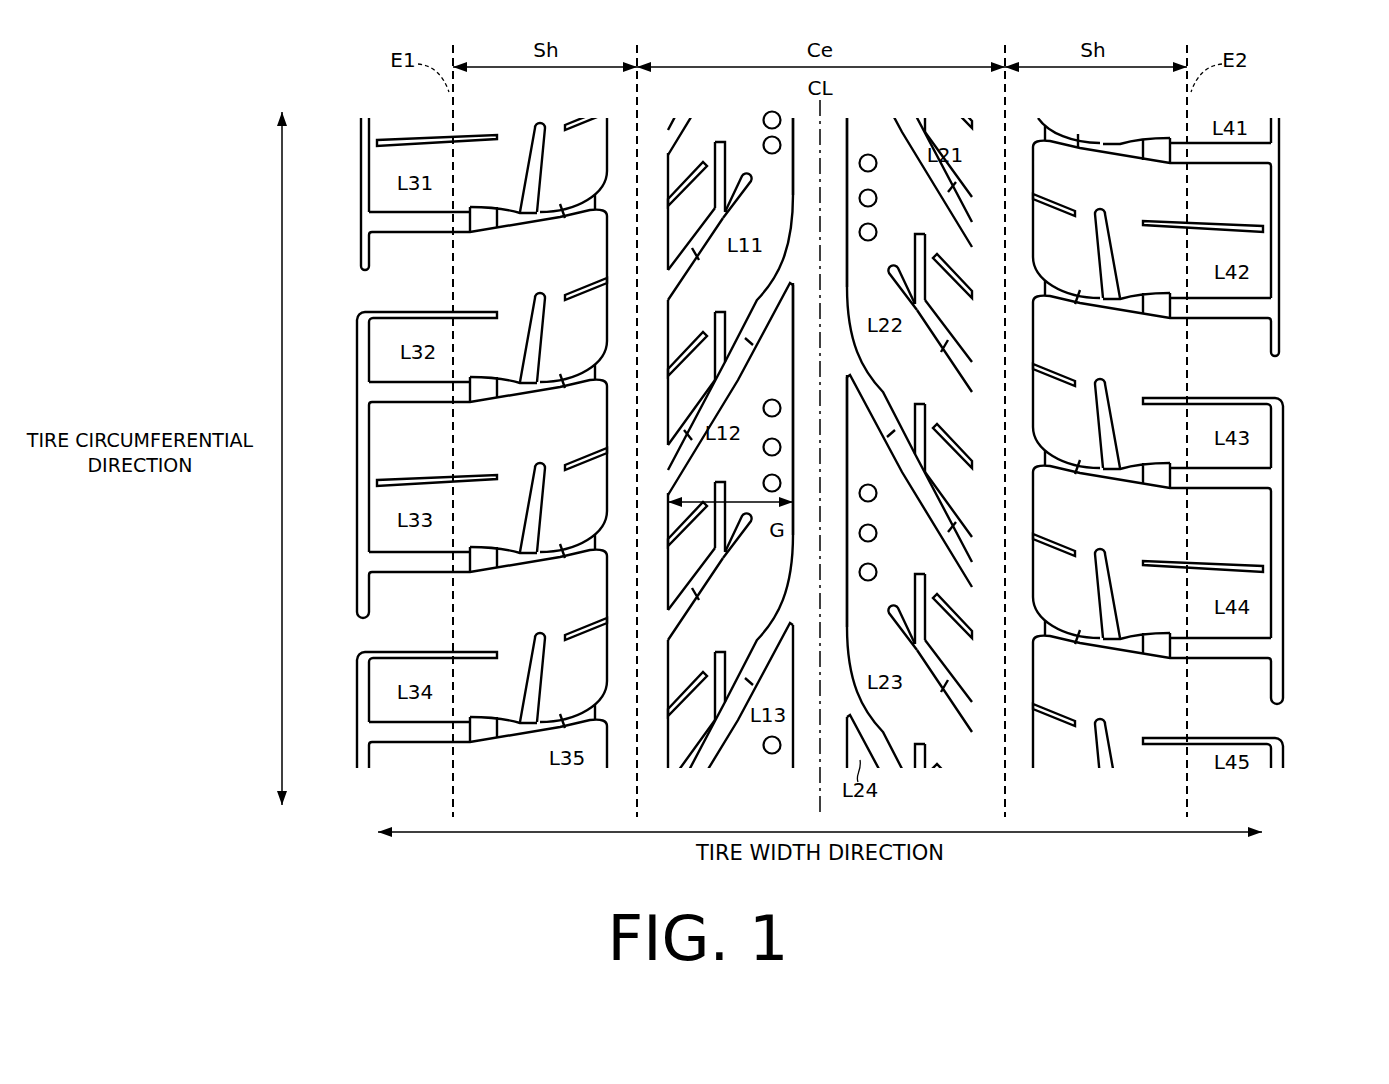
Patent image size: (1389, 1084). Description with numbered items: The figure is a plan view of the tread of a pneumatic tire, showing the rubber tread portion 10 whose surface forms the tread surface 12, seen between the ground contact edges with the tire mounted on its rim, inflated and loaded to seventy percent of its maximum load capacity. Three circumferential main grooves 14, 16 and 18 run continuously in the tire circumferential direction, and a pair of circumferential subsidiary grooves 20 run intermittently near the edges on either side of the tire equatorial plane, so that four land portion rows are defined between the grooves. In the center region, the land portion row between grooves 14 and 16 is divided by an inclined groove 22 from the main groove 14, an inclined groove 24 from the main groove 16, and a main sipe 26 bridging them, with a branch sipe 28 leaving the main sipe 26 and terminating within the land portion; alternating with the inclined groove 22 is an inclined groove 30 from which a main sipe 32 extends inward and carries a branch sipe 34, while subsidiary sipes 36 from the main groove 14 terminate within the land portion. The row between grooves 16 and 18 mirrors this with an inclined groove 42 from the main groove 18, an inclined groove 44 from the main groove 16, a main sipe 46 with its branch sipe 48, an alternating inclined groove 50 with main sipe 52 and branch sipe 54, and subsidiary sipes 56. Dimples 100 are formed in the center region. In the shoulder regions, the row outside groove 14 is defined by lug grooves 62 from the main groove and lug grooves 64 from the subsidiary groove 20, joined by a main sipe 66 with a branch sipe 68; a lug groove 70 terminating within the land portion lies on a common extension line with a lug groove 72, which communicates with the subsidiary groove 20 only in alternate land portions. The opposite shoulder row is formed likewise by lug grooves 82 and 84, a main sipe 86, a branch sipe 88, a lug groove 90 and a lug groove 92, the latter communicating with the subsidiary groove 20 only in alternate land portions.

The tread portion 10 is at (1300, 106).
The tread surface 12 is at (1160, 125).
The circumferential main groove 14 is at (615, 128).
The circumferential main groove 16 is at (835, 114).
The circumferential main groove 18 is at (1038, 122).
The circumferential subsidiary groove 20 is at (1283, 750).
The inclined groove 22 is at (690, 770).
The inclined groove 24 is at (772, 640).
The main sipe 26 is at (712, 745).
The branch sipe 28 is at (716, 662).
The inclined groove 30 is at (688, 628).
The main sipe 32 is at (730, 568).
The branch sipe 34 is at (718, 528).
The subsidiary sipe 36 is at (690, 712).
The inclined groove 42 is at (955, 530).
The inclined groove 44 is at (868, 375).
The main sipe 46 is at (920, 480).
The branch sipe 48 is at (926, 415).
The inclined groove 50 is at (952, 698).
The main sipe 52 is at (895, 624).
The branch sipe 54 is at (926, 755).
The subsidiary sipe 56 is at (955, 623).
The lug groove 62 is at (588, 645).
The lug groove 64 is at (408, 748).
The main sipe 66 is at (522, 740).
The branch sipe 68 is at (526, 688).
The lug groove 70 is at (583, 626).
The lug groove 72 is at (430, 651).
The lug groove 82 is at (1045, 643).
The lug groove 84 is at (1260, 663).
The main sipe 86 is at (1143, 662).
The branch sipe 88 is at (1108, 756).
The lug groove 90 is at (1050, 727).
The lug groove 92 is at (1215, 738).
The dimple 100 is at (868, 581).